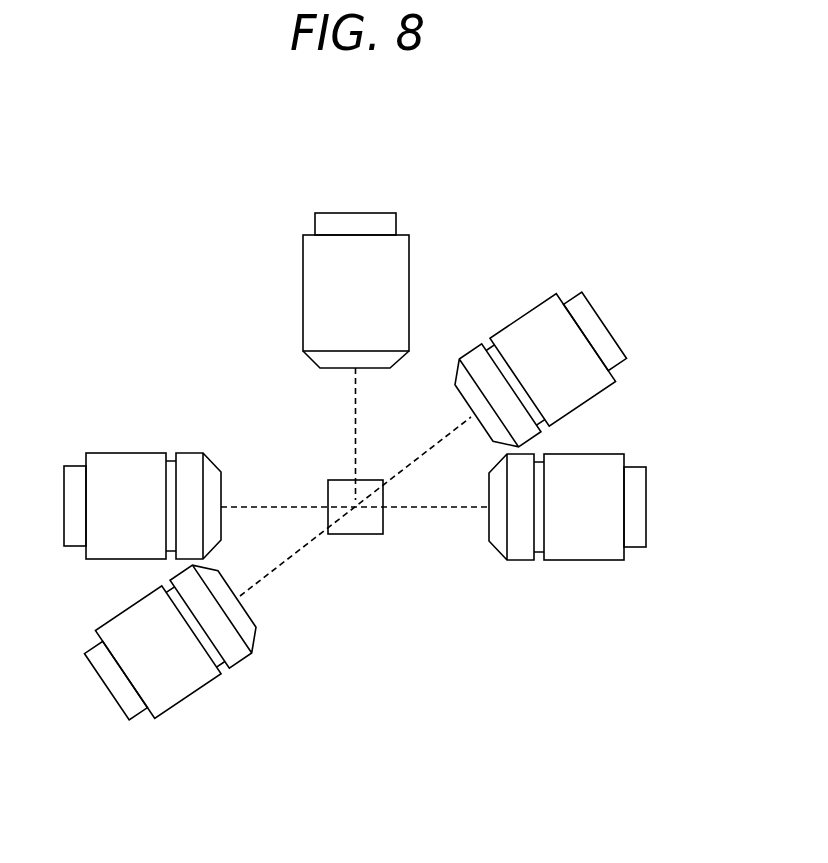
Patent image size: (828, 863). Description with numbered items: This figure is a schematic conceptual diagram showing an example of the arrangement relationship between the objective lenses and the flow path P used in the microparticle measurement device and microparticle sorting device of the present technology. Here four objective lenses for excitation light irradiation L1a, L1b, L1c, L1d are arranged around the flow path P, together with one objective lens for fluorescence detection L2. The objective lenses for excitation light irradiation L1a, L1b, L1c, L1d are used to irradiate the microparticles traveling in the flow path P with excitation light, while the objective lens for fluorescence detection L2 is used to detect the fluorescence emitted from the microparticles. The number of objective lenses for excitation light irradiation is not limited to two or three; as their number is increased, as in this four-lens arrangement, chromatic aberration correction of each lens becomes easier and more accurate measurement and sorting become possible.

The objective lens for excitation light irradiation L1a is at (120, 470).
The objective lens for excitation light irradiation L1b is at (583, 545).
The objective lens for excitation light irradiation L1c is at (593, 325).
The objective lens for excitation light irradiation L1d is at (115, 680).
The objective lens for fluorescence detection L2 is at (355, 223).
The flow path P is at (362, 522).